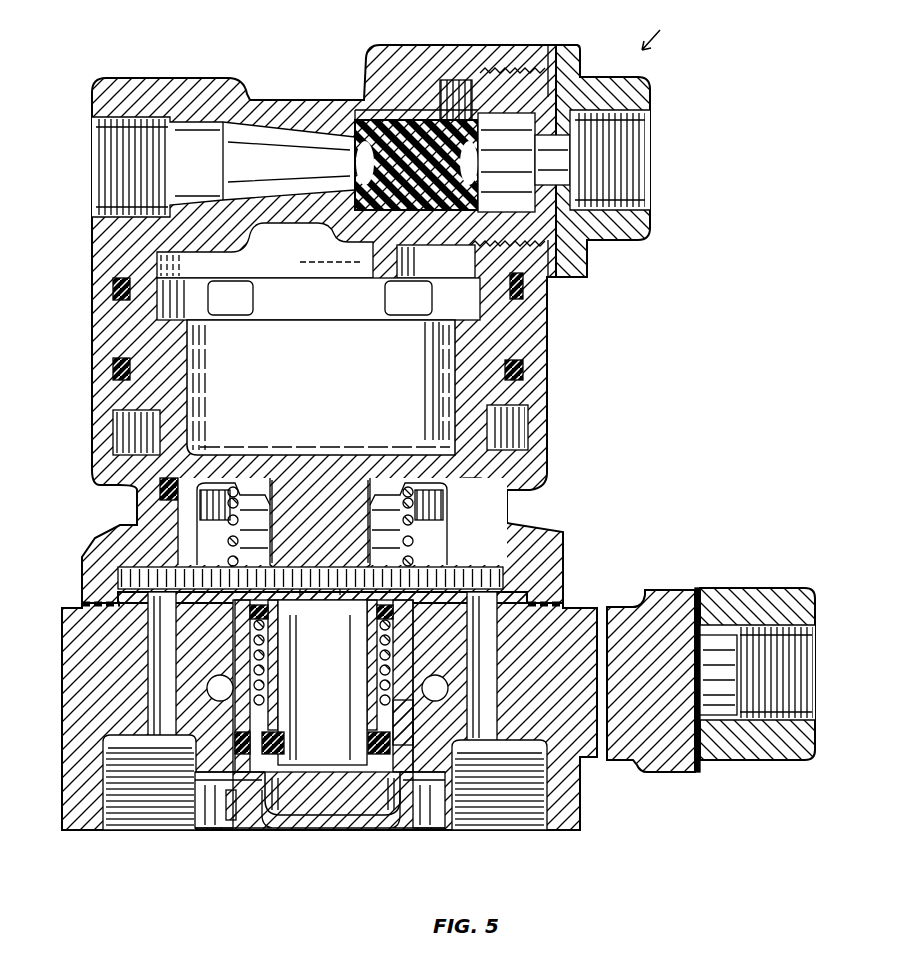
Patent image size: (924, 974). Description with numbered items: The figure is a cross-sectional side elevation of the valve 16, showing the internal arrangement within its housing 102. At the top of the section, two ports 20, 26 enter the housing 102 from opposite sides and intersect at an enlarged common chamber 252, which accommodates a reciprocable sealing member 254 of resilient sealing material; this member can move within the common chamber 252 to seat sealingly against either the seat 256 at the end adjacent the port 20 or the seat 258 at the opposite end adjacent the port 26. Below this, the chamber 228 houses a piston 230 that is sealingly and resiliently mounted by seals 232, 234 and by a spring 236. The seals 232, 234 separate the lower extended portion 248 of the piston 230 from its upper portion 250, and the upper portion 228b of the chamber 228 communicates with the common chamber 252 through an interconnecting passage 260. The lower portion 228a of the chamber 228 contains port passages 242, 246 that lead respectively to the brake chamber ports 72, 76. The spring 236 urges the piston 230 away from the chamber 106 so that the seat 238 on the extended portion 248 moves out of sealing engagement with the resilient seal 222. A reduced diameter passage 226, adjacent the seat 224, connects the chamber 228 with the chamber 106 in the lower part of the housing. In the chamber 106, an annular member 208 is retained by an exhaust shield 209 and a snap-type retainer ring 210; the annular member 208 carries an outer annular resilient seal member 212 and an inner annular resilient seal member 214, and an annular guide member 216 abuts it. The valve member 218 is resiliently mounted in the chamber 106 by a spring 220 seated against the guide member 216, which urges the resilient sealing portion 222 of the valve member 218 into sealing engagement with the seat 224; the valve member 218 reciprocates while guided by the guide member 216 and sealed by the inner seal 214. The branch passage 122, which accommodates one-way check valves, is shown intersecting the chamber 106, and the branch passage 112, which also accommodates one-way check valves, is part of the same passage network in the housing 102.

The valve 16 is at (657, 27).
The port 20 is at (652, 201).
The port 26 is at (100, 200).
The brake chamber port 72 is at (525, 832).
The brake chamber port 76 is at (170, 832).
The housing 102 is at (416, 45).
The chamber 106 is at (400, 652).
The branch passage 112 is at (448, 685).
The branch passage 122 is at (207, 688).
The annular member 208 is at (332, 793).
The exhaust shield 209 is at (272, 830).
The snap-type retainer ring 210 is at (224, 822).
The outer annular resilient seal member 212 is at (237, 738).
The inner annular resilient seal member 214 is at (272, 743).
The annular guide member 216 is at (410, 722).
The valve member 218 is at (365, 715).
The spring 220 is at (255, 660).
The resilient sealing portion 222 is at (225, 611).
The seat 224 is at (417, 606).
The reduced diameter passage 226 is at (239, 524).
The chamber 228 is at (160, 549).
The lower portion of chamber 228a is at (462, 540).
The upper portion of chamber 228b is at (425, 341).
The piston 230 is at (460, 382).
The seal 232 is at (525, 368).
The seal 234 is at (478, 488).
The spring 236 is at (403, 500).
The seat 238 is at (320, 575).
The port passage 242 is at (497, 645).
The port passage 246 is at (150, 647).
The extended portion of piston 248 is at (345, 533).
The upper portion of piston 250 is at (178, 343).
The enlarged common chamber 252 is at (488, 185).
The reciprocable sealing member 254 is at (379, 118).
The seat 256 is at (530, 215).
The seat 258 is at (352, 205).
The interconnecting passage 260 is at (476, 262).